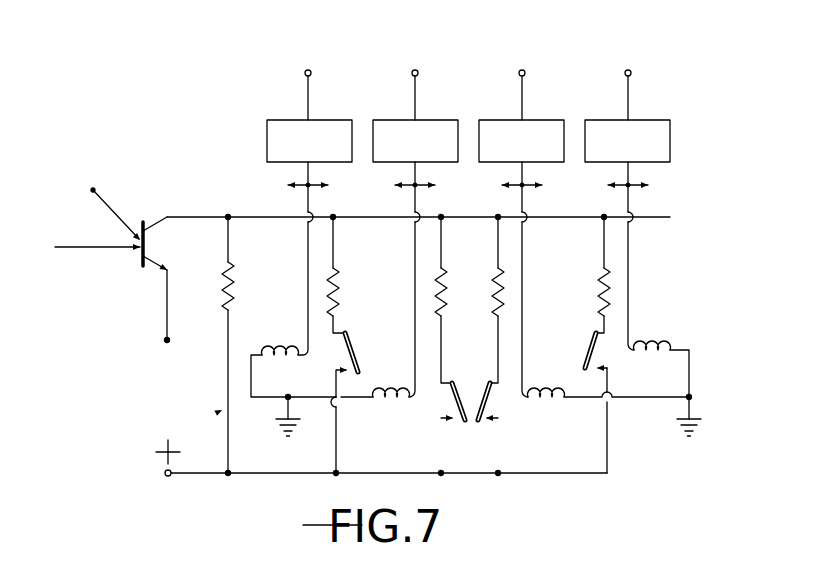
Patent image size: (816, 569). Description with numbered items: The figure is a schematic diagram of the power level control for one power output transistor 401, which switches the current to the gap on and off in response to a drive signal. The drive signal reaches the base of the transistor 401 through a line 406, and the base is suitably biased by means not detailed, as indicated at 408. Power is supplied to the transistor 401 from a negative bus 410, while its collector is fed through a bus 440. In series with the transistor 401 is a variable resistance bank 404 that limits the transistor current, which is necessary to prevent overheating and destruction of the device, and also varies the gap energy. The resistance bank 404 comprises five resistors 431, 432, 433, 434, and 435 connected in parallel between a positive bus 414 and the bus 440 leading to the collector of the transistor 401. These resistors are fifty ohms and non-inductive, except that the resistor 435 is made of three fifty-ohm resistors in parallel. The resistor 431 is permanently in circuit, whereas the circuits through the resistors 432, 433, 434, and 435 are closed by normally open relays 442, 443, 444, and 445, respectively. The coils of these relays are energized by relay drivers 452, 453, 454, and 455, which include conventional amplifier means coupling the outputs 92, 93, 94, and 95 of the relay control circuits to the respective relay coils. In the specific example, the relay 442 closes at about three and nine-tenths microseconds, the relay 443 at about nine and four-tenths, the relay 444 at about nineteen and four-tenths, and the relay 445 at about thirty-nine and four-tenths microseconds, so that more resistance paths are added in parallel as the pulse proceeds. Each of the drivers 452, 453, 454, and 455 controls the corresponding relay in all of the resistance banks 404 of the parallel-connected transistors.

The output of relay control circuit 92 is at (306, 70).
The output of relay control circuit 93 is at (412, 70).
The output of relay control circuit 94 is at (520, 72).
The output of relay control circuit 95 is at (626, 72).
The power transistor 401 is at (150, 247).
The variable resistance bank 404 is at (220, 411).
The line 406 is at (113, 247).
The base bias 408 is at (118, 215).
The negative bus 410 is at (167, 315).
The positive bus 414 is at (222, 475).
The resistor 431 is at (236, 300).
The resistor 432 is at (342, 298).
The resistor 433 is at (448, 288).
The resistor 434 is at (493, 298).
The resistor 435 is at (598, 310).
The bus 440 is at (254, 215).
The relay 442 is at (298, 345).
The relay 443 is at (394, 405).
The relay 444 is at (542, 400).
The relay 445 is at (660, 345).
The relay driver 452 is at (280, 124).
The relay driver 453 is at (393, 124).
The relay driver 454 is at (493, 124).
The relay driver 455 is at (600, 124).